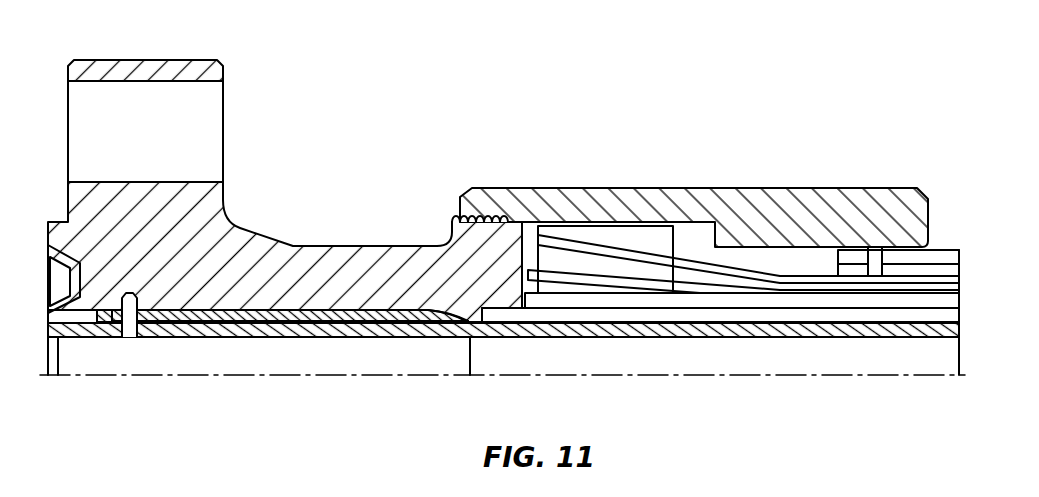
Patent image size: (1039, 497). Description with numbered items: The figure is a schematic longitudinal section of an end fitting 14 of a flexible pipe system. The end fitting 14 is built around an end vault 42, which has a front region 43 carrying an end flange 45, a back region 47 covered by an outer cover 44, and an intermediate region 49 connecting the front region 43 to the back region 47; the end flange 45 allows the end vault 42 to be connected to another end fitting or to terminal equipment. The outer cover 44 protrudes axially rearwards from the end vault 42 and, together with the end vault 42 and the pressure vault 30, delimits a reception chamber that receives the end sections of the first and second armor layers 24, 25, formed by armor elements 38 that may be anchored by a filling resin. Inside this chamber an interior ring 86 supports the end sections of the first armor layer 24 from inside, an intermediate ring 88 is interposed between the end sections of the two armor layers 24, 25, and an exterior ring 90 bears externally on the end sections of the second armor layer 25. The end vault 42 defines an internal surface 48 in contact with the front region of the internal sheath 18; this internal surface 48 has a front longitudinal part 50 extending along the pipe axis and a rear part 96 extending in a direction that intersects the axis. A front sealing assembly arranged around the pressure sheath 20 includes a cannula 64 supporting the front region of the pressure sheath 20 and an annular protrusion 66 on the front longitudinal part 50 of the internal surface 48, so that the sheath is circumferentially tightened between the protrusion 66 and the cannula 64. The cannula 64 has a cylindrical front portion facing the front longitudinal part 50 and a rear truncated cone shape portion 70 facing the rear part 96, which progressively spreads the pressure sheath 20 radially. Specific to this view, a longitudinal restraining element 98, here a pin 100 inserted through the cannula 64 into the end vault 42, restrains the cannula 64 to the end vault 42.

The end fitting 14 is at (561, 117).
The internal sheath 18 is at (837, 330).
The pressure sheath 20 is at (932, 330).
The first armor layer 24 is at (960, 290).
The second armor layer 25 is at (960, 280).
The pressure vault 30 is at (954, 317).
The armor elements 38 is at (703, 283).
The end vault 42 is at (175, 212).
The front region 43 is at (246, 166).
The outer cover 44 is at (660, 203).
The end flange 45 is at (142, 59).
The back region 47 is at (746, 166).
The internal surface 48 is at (345, 305).
The intermediate region 49 is at (388, 206).
The front longitudinal part 50 is at (301, 316).
The cannula 64 is at (292, 328).
The annular protrusion 66 is at (203, 312).
The rear truncated cone shape portion 70 is at (424, 338).
The interior ring 86 is at (553, 288).
The intermediate ring 88 is at (603, 267).
The exterior ring 90 is at (625, 237).
The rear part 96 is at (426, 322).
The longitudinal restraining element 98 is at (128, 338).
The pin 100 is at (120, 316).